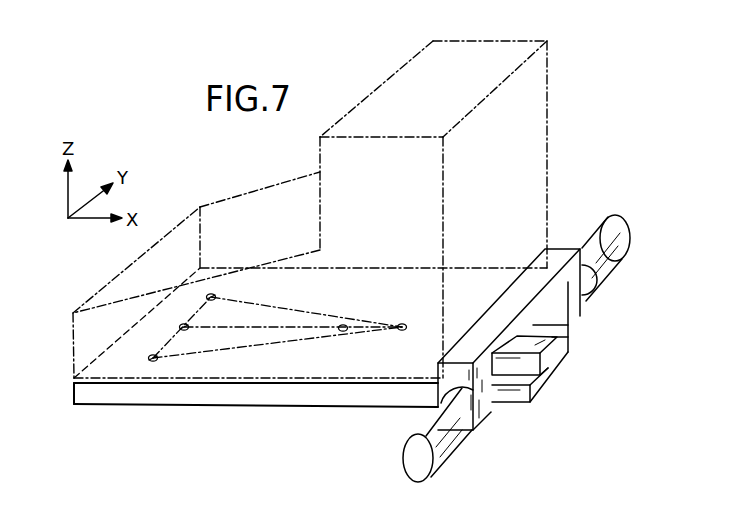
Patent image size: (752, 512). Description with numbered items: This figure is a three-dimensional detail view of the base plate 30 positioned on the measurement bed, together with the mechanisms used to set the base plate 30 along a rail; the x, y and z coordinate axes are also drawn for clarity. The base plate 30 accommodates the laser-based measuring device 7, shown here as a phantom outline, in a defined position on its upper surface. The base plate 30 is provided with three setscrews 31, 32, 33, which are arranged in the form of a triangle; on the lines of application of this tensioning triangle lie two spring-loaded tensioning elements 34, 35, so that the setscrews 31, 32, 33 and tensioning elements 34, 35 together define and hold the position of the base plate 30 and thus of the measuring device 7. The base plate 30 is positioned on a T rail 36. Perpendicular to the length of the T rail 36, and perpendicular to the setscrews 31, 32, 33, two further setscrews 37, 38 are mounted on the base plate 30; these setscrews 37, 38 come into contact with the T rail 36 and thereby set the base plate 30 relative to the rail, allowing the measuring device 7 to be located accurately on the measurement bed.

The laser-based measuring device 7 is at (570, 58).
The base plate 30 is at (292, 394).
The setscrew 31 is at (152, 355).
The setscrew 32 is at (216, 296).
The setscrew 33 is at (403, 324).
The spring-loaded tensioning element 34 is at (183, 324).
The spring-loaded tensioning element 35 is at (343, 331).
The T rail 36 is at (556, 358).
The setscrew 37 is at (458, 443).
The setscrew 38 is at (619, 265).